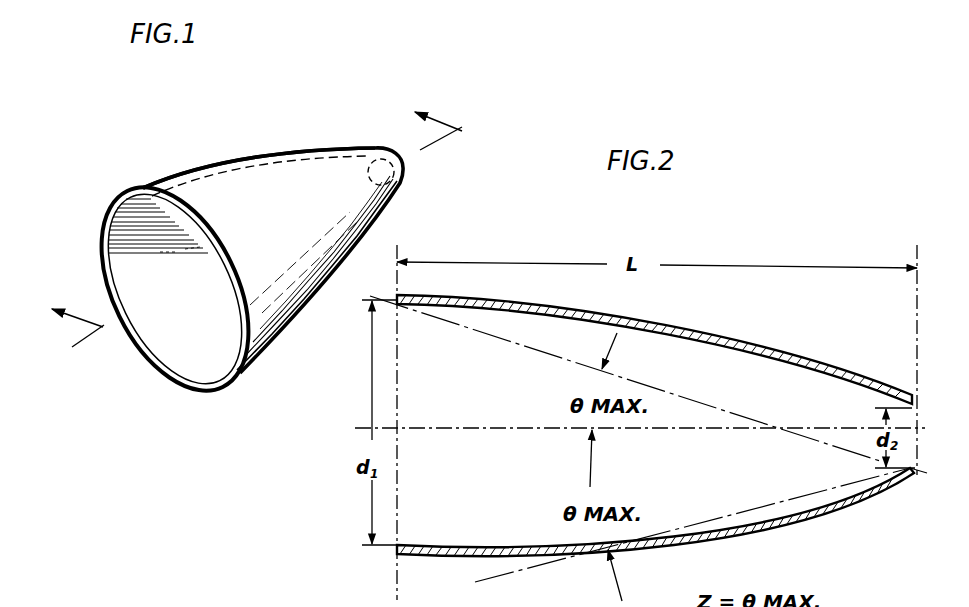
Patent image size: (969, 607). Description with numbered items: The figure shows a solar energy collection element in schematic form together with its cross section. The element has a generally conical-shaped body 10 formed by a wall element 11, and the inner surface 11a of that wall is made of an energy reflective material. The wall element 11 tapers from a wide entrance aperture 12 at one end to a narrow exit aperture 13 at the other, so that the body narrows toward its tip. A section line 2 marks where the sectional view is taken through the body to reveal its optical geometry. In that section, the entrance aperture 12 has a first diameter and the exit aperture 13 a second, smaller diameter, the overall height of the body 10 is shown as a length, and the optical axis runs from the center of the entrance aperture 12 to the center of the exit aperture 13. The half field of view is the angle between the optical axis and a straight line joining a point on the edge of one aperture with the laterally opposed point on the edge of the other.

The conical-shaped body 10 is at (306, 136).
The wall element 11 is at (226, 163).
The inner surface 11a is at (204, 316).
The entrance aperture 12 is at (160, 328).
The exit aperture 13 is at (399, 173).
The section line 2— 2 is at (244, 215).